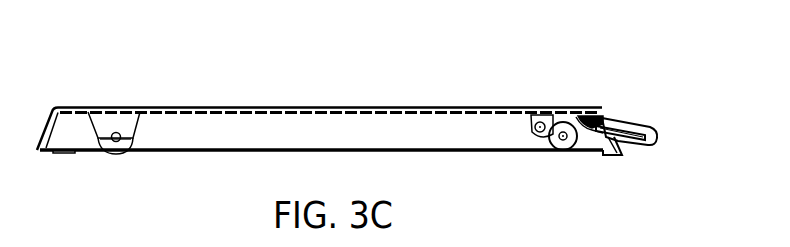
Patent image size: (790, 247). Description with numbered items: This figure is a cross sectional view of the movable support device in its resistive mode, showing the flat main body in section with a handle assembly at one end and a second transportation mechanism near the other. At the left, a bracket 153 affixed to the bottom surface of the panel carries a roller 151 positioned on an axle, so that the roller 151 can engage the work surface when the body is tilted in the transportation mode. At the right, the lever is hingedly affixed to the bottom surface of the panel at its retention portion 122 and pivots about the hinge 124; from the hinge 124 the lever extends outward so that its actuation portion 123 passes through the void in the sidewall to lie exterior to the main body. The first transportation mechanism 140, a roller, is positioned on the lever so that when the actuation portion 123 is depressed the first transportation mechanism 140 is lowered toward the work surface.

The bracket 153 is at (110, 125).
The roller 151 is at (115, 153).
The hinge 124 is at (537, 108).
The first transportation mechanism 140 is at (562, 150).
The retention portion 122 is at (580, 108).
The actuation portion 123 is at (660, 133).